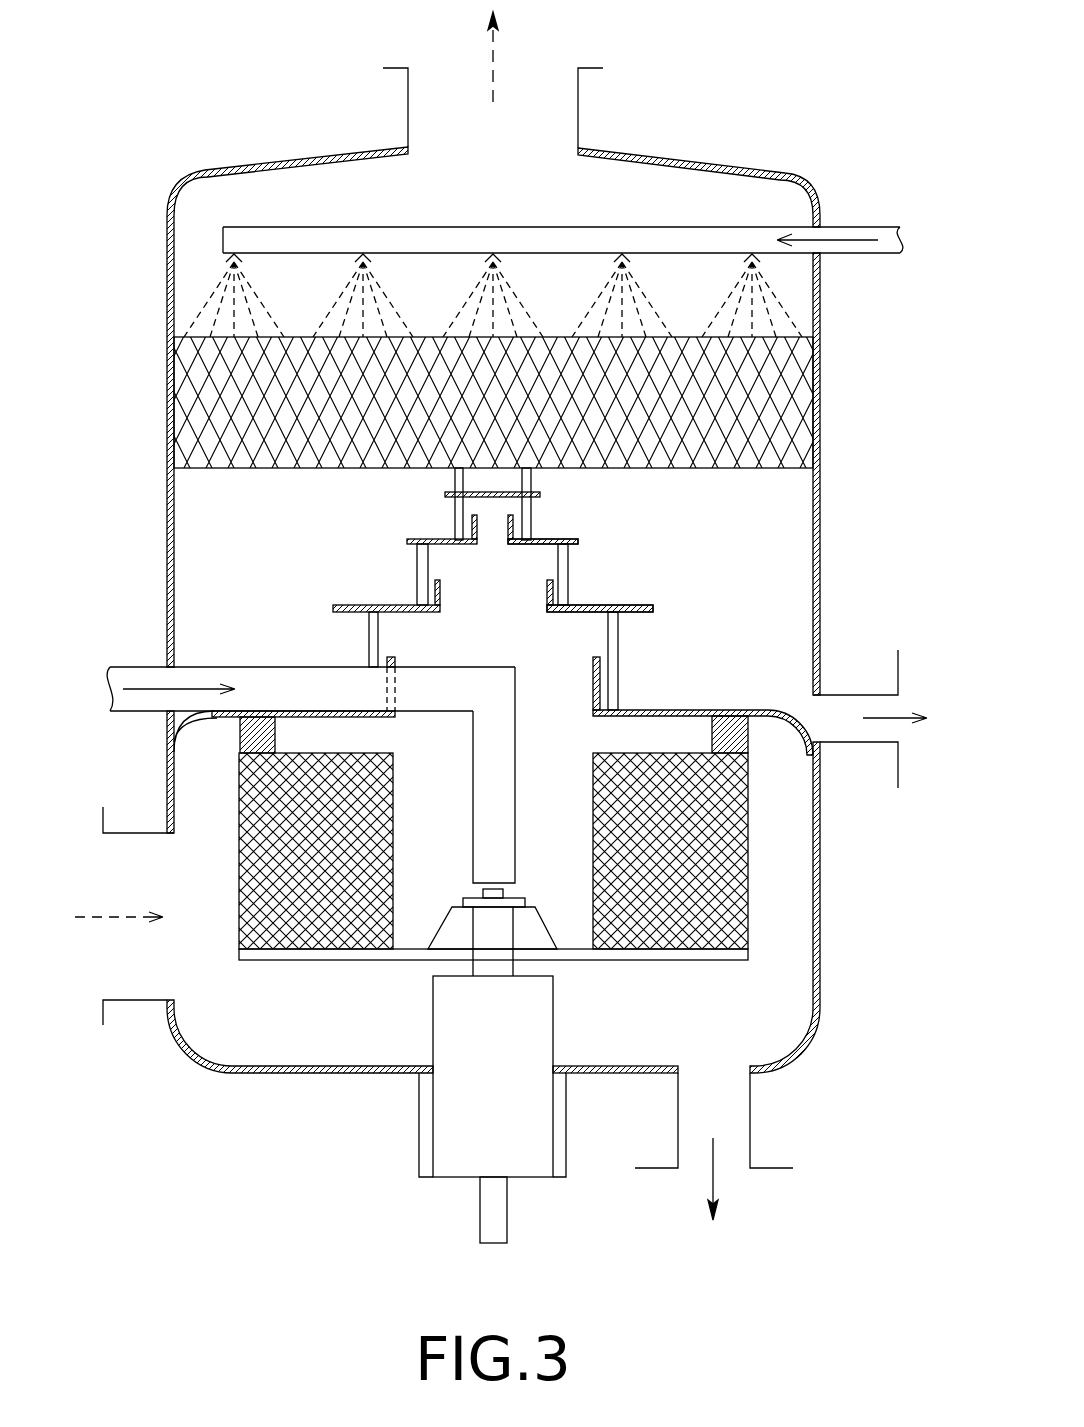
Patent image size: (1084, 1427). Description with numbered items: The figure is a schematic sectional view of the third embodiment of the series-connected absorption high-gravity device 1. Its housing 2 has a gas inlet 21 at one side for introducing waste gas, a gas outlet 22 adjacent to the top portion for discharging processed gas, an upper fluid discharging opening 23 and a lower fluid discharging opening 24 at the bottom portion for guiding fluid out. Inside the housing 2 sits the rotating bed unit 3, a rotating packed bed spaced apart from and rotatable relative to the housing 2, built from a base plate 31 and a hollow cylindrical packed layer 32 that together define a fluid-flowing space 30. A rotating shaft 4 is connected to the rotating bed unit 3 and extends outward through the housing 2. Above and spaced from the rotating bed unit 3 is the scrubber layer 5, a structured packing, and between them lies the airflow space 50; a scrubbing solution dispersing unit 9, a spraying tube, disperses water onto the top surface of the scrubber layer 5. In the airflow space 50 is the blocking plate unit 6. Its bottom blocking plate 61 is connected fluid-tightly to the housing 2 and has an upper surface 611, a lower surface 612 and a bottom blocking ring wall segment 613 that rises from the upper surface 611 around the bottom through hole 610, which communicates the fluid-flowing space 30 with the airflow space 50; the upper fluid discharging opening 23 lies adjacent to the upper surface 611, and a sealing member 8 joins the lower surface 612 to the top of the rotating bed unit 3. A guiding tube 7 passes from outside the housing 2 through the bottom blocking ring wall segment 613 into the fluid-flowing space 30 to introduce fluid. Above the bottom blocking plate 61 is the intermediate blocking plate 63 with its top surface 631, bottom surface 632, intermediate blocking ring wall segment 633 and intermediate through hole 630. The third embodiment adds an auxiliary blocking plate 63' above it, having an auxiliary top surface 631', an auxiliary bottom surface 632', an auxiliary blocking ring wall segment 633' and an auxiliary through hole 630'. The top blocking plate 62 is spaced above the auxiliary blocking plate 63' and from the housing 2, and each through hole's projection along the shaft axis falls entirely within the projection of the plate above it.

The series-connected absorption high-gravity device 1 is at (773, 67).
The housing 2 is at (822, 323).
The gas inlet 21 is at (127, 833).
The gas outlet 22 is at (578, 112).
The upper fluid discharging opening 23 is at (857, 693).
The lower fluid discharging opening 24 is at (750, 1120).
The rotating bed unit 3 is at (522, 883).
The fluid-flowing space 30 is at (545, 785).
The base plate 31 is at (703, 960).
The packed layer 32 is at (733, 913).
The rotating shaft 4 is at (512, 968).
The scrubber layer 5 is at (798, 390).
The airflow space 50 is at (790, 575).
The blocking plate unit 6 is at (317, 532).
The bottom blocking plate 61 is at (358, 717).
The bottom through hole 610 is at (533, 713).
The upper surface 611 is at (681, 686).
The lower surface 612 is at (703, 717).
The bottom blocking ring wall segment 613 is at (593, 678).
The top blocking plate 62 is at (533, 493).
The intermediate blocking plate 63 is at (365, 606).
The intermediate through hole 630 is at (463, 580).
The top surface 631 is at (630, 638).
The bottom surface 632 is at (631, 627).
The intermediate blocking ring wall segment 633 is at (453, 616).
The auxiliary blocking plate 63' is at (402, 560).
The auxiliary through hole 630' is at (421, 523).
The auxiliary top surface 631' is at (586, 555).
The auxiliary bottom surface 632' is at (587, 557).
The auxiliary blocking ring wall segment 633' is at (615, 512).
The guiding tube 7 is at (473, 795).
The sealing member 8 is at (745, 737).
The scrubbing solution dispersing unit 9 is at (562, 227).